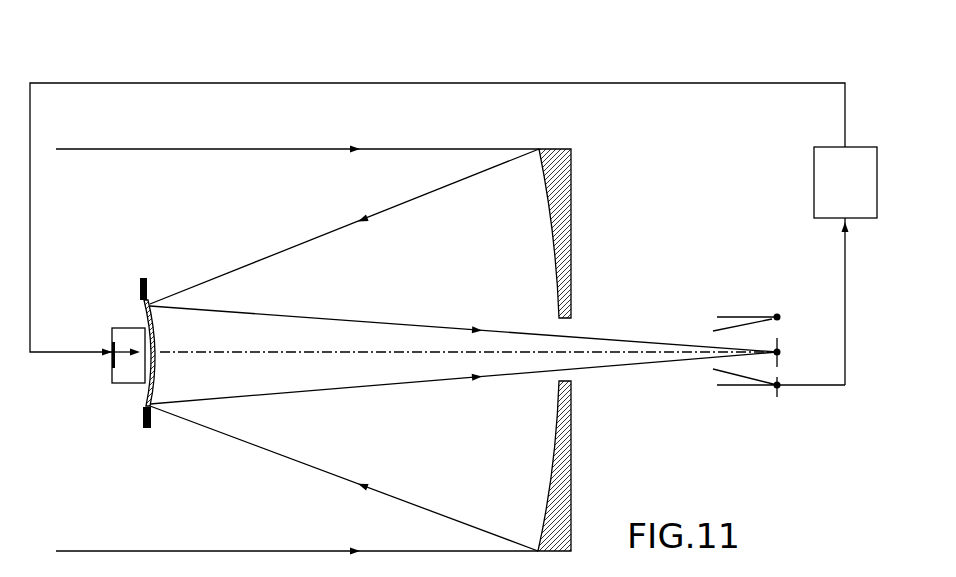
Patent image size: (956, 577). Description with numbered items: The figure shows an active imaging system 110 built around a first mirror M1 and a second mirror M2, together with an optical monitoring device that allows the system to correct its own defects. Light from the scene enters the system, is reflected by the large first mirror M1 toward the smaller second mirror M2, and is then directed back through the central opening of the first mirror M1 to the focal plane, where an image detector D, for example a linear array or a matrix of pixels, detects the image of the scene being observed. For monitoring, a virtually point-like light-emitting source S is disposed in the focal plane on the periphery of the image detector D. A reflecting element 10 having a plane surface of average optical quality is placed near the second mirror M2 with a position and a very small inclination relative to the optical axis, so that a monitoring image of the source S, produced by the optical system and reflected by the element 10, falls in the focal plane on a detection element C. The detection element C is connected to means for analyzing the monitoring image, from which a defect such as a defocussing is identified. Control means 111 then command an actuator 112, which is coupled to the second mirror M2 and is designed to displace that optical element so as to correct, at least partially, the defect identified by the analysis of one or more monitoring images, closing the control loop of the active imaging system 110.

The active imaging system 110 is at (262, 71).
The control means 111 is at (814, 198).
The actuator 112 is at (125, 328).
The reflecting element 10 is at (148, 292).
The first mirror M1 is at (572, 200).
The second mirror M2 is at (145, 394).
The light-emitting source S is at (778, 313).
The image detector D is at (781, 352).
The detection element C is at (780, 387).